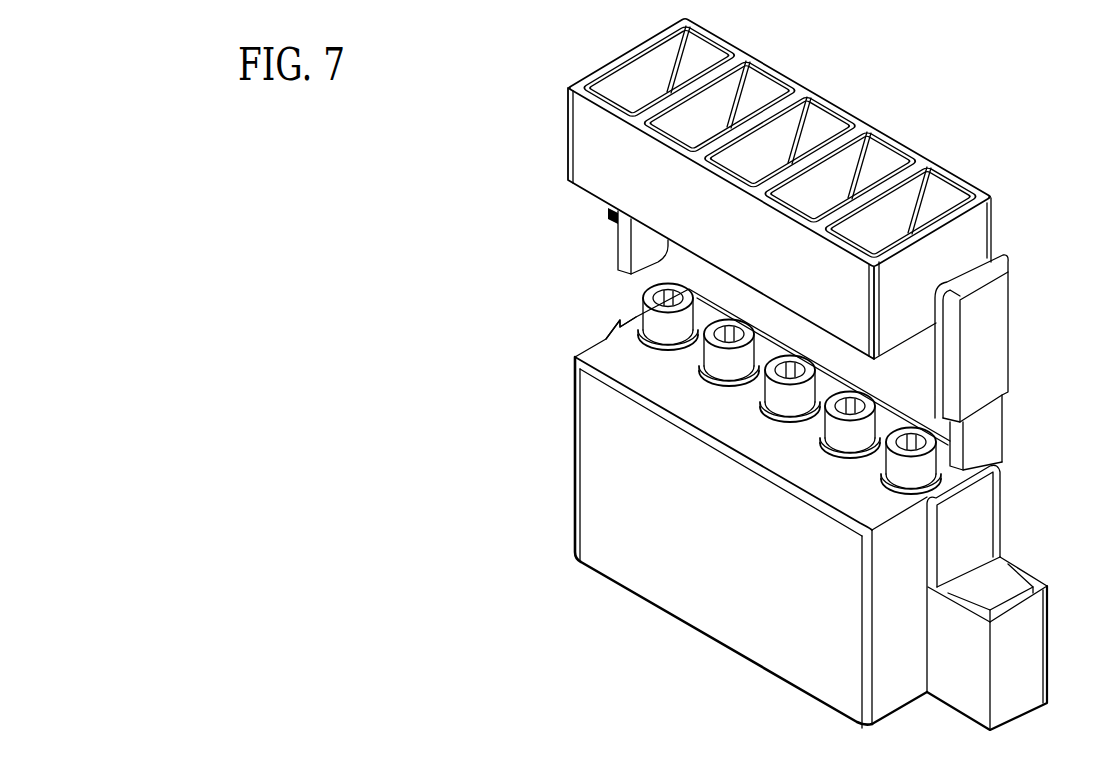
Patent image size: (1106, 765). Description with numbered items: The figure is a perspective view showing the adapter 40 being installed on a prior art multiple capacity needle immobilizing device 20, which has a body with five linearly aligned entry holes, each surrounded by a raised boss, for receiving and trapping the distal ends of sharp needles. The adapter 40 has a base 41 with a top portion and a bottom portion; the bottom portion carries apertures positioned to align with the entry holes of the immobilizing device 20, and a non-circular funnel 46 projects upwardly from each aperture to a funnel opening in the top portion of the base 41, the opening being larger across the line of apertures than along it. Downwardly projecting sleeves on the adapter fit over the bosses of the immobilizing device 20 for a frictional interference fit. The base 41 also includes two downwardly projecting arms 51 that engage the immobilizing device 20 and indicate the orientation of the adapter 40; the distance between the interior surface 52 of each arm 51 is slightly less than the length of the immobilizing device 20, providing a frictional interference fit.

The multiple capacity needle immobilizing device 20 is at (789, 506).
The adapter 40 is at (772, 244).
The base 41 is at (597, 146).
The non-circular funnel 46 is at (698, 56).
The downwardly projecting arm 51 is at (626, 252).
The interior surface 52 is at (641, 283).